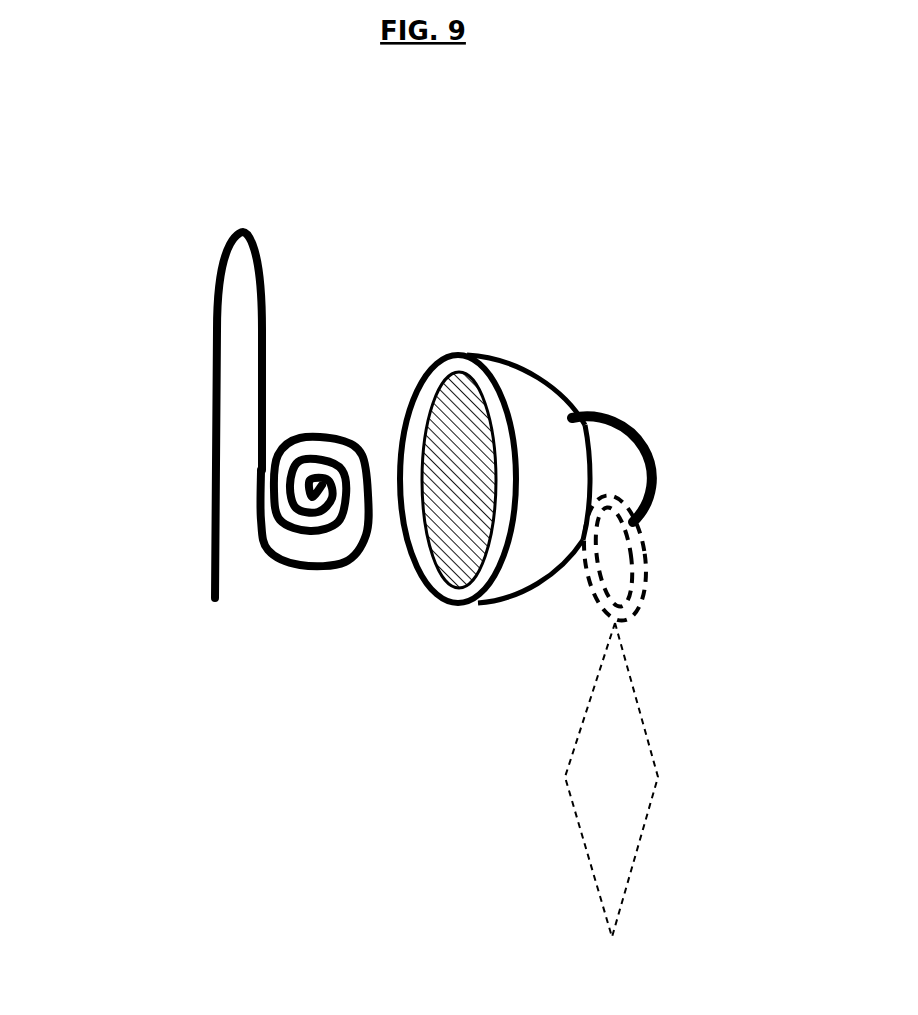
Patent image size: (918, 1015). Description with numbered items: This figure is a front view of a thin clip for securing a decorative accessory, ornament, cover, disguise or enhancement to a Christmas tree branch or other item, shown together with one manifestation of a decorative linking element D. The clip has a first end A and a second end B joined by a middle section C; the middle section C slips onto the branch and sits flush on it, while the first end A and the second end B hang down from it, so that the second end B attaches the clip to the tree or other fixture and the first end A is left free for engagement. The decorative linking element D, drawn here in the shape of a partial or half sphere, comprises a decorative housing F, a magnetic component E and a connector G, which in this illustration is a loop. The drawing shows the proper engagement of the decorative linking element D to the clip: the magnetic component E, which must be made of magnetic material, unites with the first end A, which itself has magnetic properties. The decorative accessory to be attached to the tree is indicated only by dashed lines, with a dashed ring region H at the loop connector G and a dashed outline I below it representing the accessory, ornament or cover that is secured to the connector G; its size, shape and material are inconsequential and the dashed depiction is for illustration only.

The first end A is at (314, 372).
The second end B is at (108, 388).
The middle section C is at (172, 152).
The decorative linking element D is at (602, 274).
The magnetic component E is at (445, 550).
The decorative housing F is at (645, 343).
The connector G is at (737, 485).
The dashed ring region H is at (712, 649).
The dashed diamond outline I is at (400, 824).